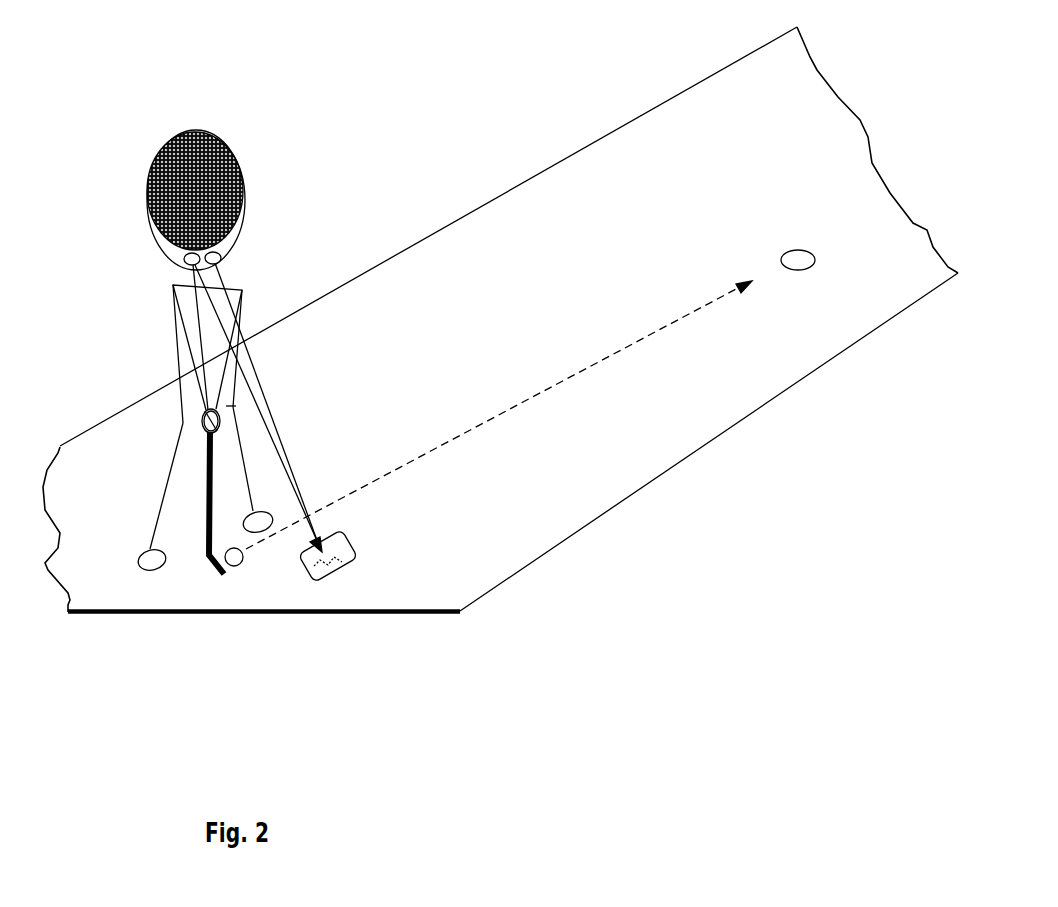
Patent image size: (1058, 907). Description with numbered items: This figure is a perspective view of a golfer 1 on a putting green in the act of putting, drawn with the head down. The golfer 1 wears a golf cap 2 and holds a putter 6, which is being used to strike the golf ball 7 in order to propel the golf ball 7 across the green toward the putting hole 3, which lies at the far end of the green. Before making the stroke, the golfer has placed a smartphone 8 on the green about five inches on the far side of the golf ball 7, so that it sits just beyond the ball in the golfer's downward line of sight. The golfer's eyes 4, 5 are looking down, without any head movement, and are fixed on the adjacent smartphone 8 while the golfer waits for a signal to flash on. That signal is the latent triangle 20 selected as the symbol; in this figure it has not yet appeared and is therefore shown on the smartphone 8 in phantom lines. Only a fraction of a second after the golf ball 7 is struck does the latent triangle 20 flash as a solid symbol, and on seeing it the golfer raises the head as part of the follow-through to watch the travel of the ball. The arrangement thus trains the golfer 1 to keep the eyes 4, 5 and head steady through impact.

The golfer 1 is at (150, 124).
The golf cap 2 is at (210, 133).
The putting hole 3 is at (797, 262).
The eye 4 is at (222, 255).
The eye 5 is at (185, 259).
The putter 6 is at (206, 484).
The golf ball 7 is at (235, 567).
The smartphone 8 is at (344, 552).
The latent triangle 20 is at (327, 563).